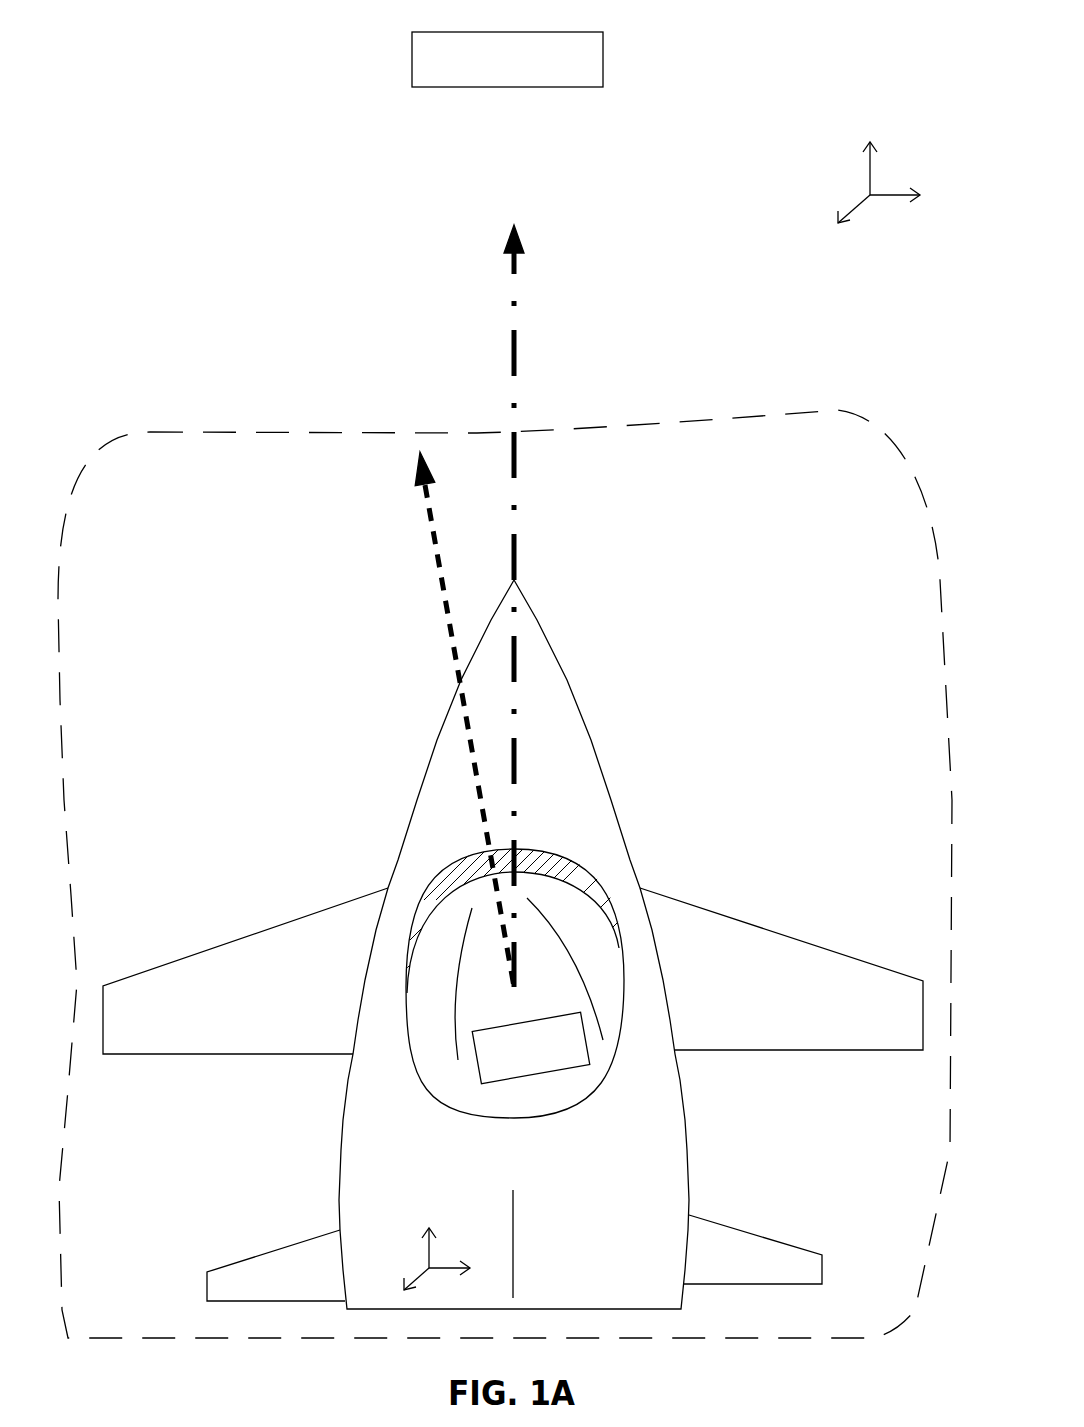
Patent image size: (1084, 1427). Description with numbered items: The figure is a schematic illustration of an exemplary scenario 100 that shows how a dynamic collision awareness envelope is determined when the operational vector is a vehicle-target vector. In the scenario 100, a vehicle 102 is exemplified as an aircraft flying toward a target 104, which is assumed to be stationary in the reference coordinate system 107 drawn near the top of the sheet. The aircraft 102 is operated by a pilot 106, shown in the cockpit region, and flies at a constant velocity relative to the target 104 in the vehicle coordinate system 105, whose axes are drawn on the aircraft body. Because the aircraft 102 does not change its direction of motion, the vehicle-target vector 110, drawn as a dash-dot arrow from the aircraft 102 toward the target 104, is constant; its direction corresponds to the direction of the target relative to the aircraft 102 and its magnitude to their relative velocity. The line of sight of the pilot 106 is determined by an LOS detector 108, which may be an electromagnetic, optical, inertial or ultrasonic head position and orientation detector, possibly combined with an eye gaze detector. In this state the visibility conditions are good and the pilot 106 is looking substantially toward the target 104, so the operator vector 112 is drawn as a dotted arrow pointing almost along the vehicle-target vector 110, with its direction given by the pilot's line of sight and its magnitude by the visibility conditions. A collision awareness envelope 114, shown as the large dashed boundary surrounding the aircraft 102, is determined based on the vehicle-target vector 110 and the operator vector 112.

The exemplary scenario 100 is at (300, 214).
The vehicle 102 is at (686, 1110).
The target 104 is at (558, 87).
The vehicle coordinate system 105 is at (426, 1255).
The operator 106 is at (537, 1118).
The reference coordinate system 107 is at (865, 158).
The LOS detector 108 is at (568, 1072).
The vehicle-target vector 110 is at (518, 348).
The operator vector 112 is at (445, 612).
The collision awareness envelope 114 is at (312, 432).